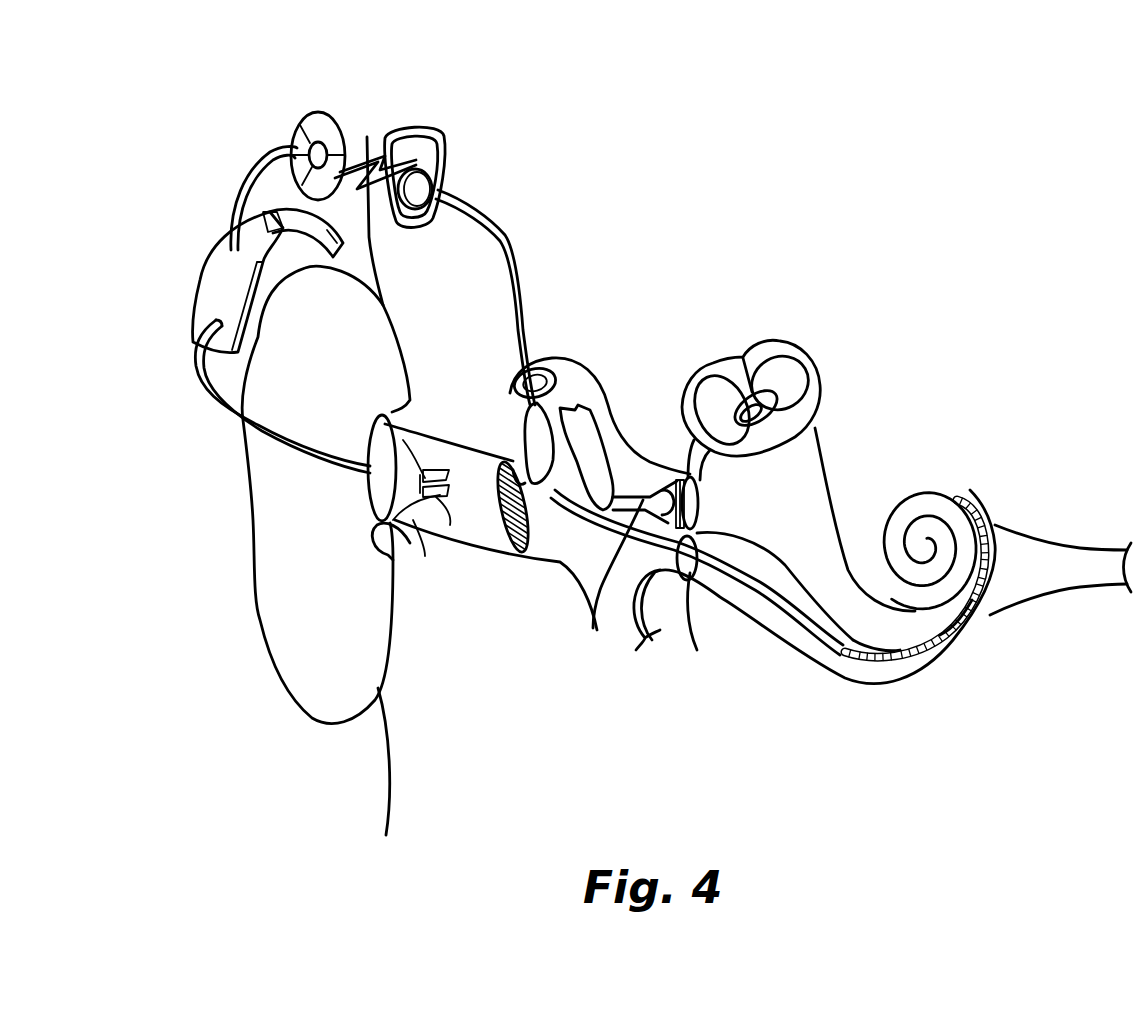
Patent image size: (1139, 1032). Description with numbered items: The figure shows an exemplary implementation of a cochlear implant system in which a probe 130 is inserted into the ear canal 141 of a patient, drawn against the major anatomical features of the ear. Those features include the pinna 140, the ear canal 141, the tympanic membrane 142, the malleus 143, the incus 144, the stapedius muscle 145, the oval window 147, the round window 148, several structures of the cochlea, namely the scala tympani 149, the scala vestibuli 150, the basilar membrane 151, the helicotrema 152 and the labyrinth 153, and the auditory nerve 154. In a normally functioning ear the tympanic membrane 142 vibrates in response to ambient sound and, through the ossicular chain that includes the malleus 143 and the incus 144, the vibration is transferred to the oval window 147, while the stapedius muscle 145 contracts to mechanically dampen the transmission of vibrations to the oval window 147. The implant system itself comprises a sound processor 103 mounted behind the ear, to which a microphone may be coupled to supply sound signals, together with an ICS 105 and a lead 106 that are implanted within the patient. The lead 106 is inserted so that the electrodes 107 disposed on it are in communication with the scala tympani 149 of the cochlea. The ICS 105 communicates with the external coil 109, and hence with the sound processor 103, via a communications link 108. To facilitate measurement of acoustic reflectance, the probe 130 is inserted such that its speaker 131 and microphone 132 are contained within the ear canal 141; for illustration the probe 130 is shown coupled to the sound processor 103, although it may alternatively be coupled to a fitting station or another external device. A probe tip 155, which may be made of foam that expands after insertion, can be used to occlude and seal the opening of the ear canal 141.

The sound processor 103 is at (207, 287).
The ICS 105 is at (443, 152).
The lead 106 is at (507, 235).
The electrodes 107 is at (865, 660).
The communications link 108 is at (363, 163).
The external coil 109 is at (297, 130).
The probe 130 is at (228, 400).
The speaker 131 is at (433, 458).
The microphone 132 is at (445, 523).
The pinna 140 is at (270, 490).
The ear canal 141 is at (480, 520).
The tympanic membrane 142 is at (483, 477).
The malleus 143 is at (510, 392).
The incus 144 is at (585, 360).
The stapedius muscle 145 is at (633, 445).
The oval window 147 is at (683, 482).
The round window 148 is at (703, 580).
The scala tympani 149 is at (917, 665).
The scala vestibuli 150 is at (813, 483).
The basilar membrane 151 is at (938, 635).
The helicotrema 152 is at (920, 530).
The labyrinth 153 is at (780, 342).
The auditory nerve 154 is at (1043, 537).
The probe tip 155 is at (420, 513).